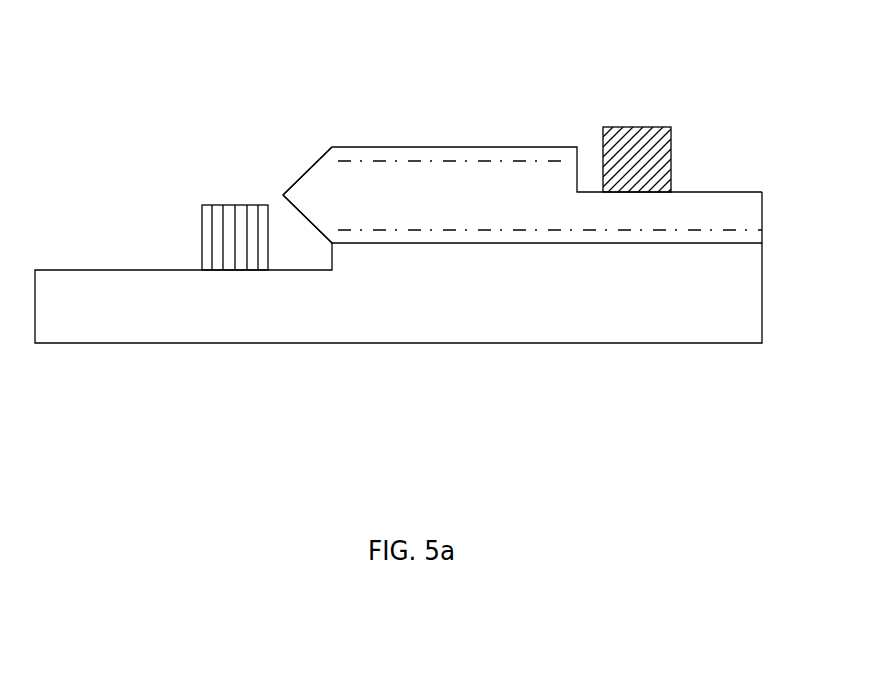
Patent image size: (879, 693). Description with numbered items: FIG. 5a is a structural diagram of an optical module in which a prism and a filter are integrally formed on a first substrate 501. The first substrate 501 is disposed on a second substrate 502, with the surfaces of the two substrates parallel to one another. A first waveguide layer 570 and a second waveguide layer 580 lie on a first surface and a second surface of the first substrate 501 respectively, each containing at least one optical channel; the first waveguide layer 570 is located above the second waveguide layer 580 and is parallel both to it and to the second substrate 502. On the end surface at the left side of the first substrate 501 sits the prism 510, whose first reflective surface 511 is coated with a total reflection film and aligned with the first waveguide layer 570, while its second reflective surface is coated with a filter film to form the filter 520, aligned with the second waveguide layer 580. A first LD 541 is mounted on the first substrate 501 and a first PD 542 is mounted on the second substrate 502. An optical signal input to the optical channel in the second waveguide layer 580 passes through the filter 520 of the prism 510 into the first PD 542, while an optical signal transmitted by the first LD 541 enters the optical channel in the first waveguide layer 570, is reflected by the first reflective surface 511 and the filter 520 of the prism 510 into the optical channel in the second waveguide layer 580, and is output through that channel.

The first substrate 501 is at (390, 197).
The second substrate 502 is at (604, 313).
The prism 510 is at (312, 197).
The first reflective surface 511 is at (318, 161).
The filter 520 is at (307, 219).
The first LD 541 is at (637, 128).
The first PD 542 is at (235, 237).
The first waveguide layer 570 is at (505, 155).
The second waveguide layer 580 is at (647, 225).